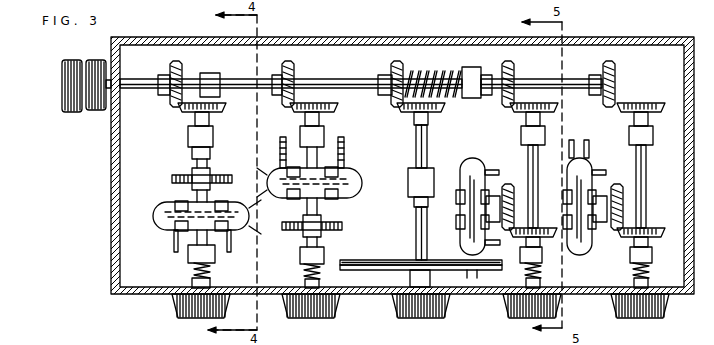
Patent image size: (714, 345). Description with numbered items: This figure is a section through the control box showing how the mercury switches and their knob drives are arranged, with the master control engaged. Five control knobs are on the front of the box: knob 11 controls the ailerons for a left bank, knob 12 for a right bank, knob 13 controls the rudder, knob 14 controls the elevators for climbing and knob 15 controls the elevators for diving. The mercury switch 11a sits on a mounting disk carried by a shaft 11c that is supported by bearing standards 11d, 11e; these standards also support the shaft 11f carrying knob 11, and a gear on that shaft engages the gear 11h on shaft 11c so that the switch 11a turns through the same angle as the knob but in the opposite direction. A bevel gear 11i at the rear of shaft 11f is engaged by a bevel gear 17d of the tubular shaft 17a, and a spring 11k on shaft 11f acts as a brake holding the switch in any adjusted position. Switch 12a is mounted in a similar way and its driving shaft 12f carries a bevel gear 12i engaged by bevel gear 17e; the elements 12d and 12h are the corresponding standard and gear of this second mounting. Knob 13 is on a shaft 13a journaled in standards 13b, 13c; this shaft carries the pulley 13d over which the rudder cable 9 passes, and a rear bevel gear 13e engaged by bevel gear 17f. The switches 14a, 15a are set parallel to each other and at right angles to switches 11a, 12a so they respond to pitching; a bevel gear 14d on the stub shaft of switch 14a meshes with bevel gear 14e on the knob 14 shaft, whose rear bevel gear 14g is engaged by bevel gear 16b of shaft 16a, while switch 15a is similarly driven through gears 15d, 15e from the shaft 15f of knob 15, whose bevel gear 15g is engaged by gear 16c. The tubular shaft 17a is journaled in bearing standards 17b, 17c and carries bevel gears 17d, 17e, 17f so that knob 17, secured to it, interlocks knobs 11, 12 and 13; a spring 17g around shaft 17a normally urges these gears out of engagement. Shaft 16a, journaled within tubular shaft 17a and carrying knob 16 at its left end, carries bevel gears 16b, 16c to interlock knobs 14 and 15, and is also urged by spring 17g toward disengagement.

The cable 9 is at (443, 260).
The knob 11 is at (172, 308).
The mercury switch 11a is at (172, 206).
The shaft 11c is at (208, 163).
The bearing standard 11d is at (188, 255).
The bearing standard 11e is at (188, 140).
The shaft 11f is at (195, 120).
The gear 11h is at (172, 178).
The bevel gear 11i is at (220, 112).
The spring 11k is at (192, 270).
The knob 12 is at (316, 318).
The mercury switch 12a is at (326, 198).
The lower bearing block 12d is at (300, 255).
The driving shaft 12f is at (322, 118).
The gear 12h is at (330, 232).
The bevel gear 12i is at (339, 107).
The knob 13 is at (437, 316).
The shaft 13a is at (416, 143).
The standard 13b is at (408, 180).
The standard 13c is at (410, 276).
The pulley 13d is at (395, 260).
The bevel gear 13e is at (446, 107).
The knob 14 is at (503, 308).
The mercury switch 14a is at (478, 160).
The bevel gear 14d is at (510, 183).
The bevel gear 14e is at (553, 228).
The bevel gear 14g is at (558, 110).
The knob 15 is at (641, 318).
The mercury switch 15a is at (567, 175).
The bevel gear 15d is at (618, 184).
The lower crown gear 15e is at (650, 228).
The shaft 15f is at (647, 170).
The bevel gear 15g is at (648, 103).
The knob 16 is at (63, 110).
The shaft 16a is at (583, 78).
The bevel gear 16b is at (512, 69).
The bevel gear 16c is at (620, 65).
The knob 17 is at (100, 112).
The tubular shaft 17a is at (334, 78).
The bearing standard 17b is at (213, 73).
The bearing standard 17c is at (476, 66).
The bevel gear 17d is at (170, 70).
The bevel gear 17e is at (291, 64).
The bevel gear 17f is at (398, 62).
The spring 17g is at (416, 72).